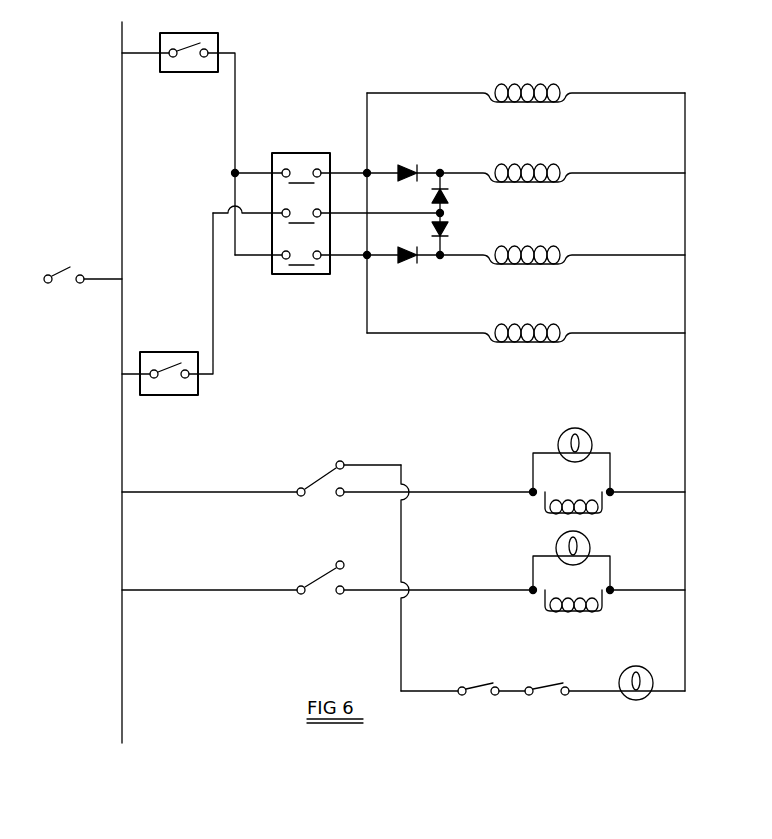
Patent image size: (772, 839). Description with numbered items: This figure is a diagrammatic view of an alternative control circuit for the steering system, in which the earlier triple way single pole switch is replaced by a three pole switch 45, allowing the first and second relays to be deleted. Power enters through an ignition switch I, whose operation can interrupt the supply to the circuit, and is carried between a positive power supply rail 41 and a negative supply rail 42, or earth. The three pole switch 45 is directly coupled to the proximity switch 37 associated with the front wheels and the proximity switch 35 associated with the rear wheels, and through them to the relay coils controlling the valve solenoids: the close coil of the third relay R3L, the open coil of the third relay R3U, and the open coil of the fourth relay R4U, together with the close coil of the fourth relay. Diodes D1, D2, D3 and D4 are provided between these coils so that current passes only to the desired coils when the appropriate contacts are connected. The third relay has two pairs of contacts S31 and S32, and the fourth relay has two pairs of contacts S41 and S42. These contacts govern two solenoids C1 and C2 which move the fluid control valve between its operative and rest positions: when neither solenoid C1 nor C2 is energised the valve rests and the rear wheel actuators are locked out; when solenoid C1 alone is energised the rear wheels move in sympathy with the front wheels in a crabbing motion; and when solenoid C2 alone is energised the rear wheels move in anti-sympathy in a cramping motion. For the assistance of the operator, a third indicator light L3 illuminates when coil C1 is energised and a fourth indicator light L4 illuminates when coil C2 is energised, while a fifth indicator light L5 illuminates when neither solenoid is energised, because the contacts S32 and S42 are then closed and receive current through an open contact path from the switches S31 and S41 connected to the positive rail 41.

The ignition switch I is at (83, 264).
The proximity switch 37 is at (218, 33).
The proximity switch 35 is at (198, 395).
The three pole switch 45 is at (308, 148).
The positive power supply rail 41 is at (122, 452).
The negative supply rail 42 is at (685, 362).
The diode D1 is at (408, 164).
The diode D2 is at (449, 197).
The diode D3 is at (449, 232).
The diode D4 is at (405, 265).
The close coil of the third relay R3L is at (581, 79).
The open coil of the fourth relay R4U is at (616, 160).
The open coil of the third relay R3U is at (598, 234).
The contacts of the third relay S31 is at (327, 489).
The contacts of the fourth relay S41 is at (327, 587).
The contacts of the third relay S32 is at (450, 700).
The contacts of the fourth relay S42 is at (534, 700).
The third indicator light L3 is at (590, 435).
The fourth indicator light L4 is at (589, 540).
The fifth indicator light L5 is at (632, 700).
The solenoid C1 is at (576, 506).
The solenoid C2 is at (583, 612).